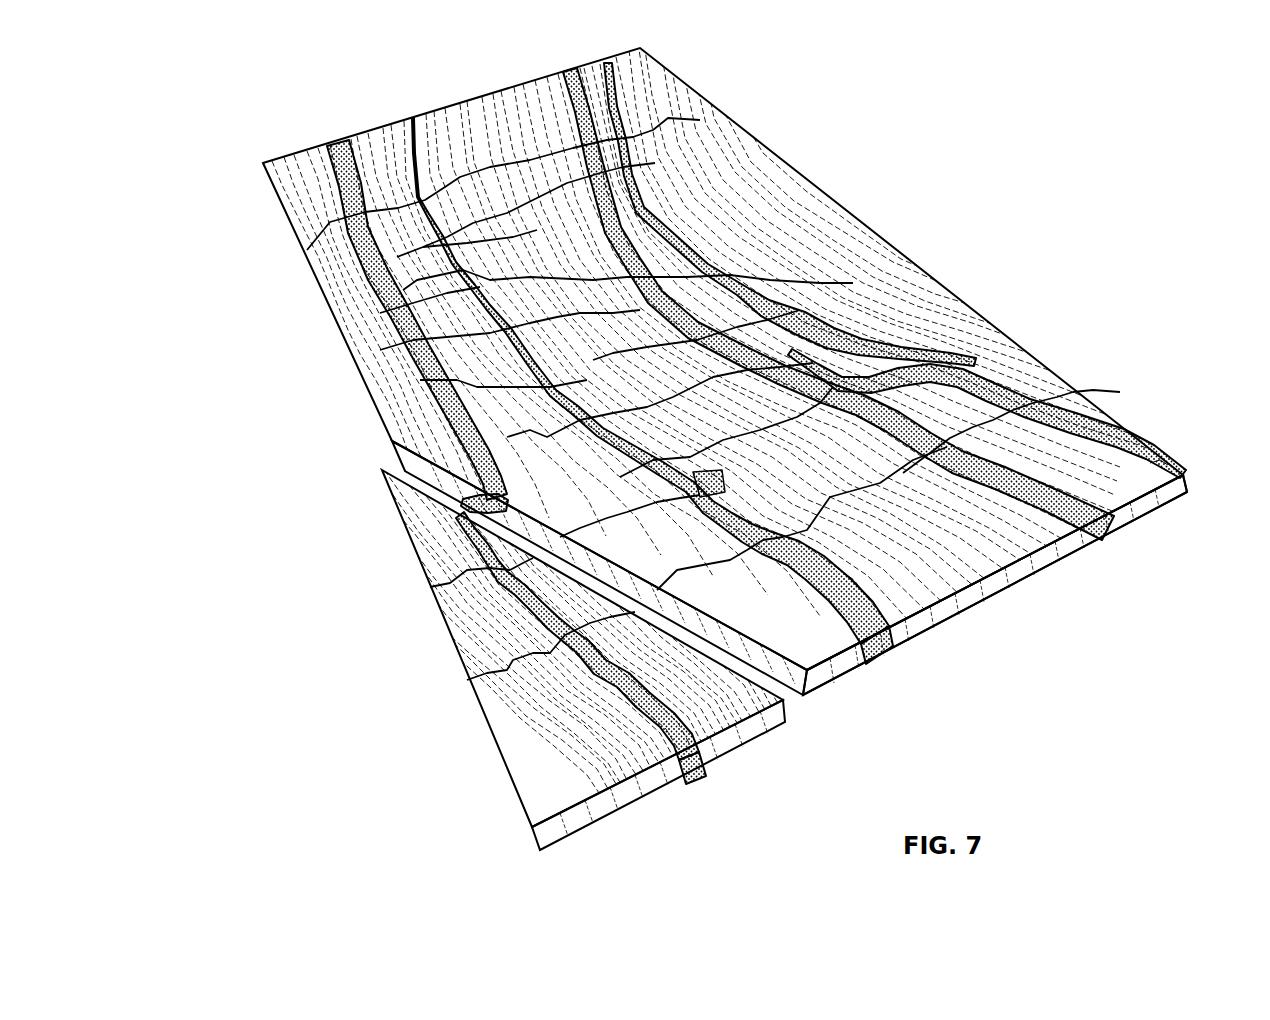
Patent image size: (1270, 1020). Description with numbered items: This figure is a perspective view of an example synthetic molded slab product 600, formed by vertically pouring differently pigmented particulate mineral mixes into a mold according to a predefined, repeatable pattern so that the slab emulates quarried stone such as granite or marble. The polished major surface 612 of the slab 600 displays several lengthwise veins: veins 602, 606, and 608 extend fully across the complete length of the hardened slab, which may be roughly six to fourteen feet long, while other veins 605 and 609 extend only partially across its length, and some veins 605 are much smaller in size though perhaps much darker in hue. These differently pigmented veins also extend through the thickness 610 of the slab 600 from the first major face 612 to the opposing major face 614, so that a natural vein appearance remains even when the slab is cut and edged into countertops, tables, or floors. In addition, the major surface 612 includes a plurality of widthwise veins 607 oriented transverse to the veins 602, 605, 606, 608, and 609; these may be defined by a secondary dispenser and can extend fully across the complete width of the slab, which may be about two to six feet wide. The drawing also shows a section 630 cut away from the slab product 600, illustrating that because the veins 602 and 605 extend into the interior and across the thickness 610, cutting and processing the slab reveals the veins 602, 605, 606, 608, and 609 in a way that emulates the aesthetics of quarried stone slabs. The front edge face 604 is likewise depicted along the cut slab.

The synthetic molded slab product 600 is at (193, 86).
The vein 602 is at (338, 143).
The front edge face 604 is at (997, 583).
The vein 605 is at (387, 137).
The vein 606 is at (413, 118).
The widthwise vein 607 is at (962, 355).
The vein 608 is at (570, 70).
The vein 609 is at (613, 87).
The thickness 610 is at (1194, 472).
The major surface 612 is at (1143, 463).
The opposing major face 614 is at (1167, 497).
The section 630 is at (381, 478).